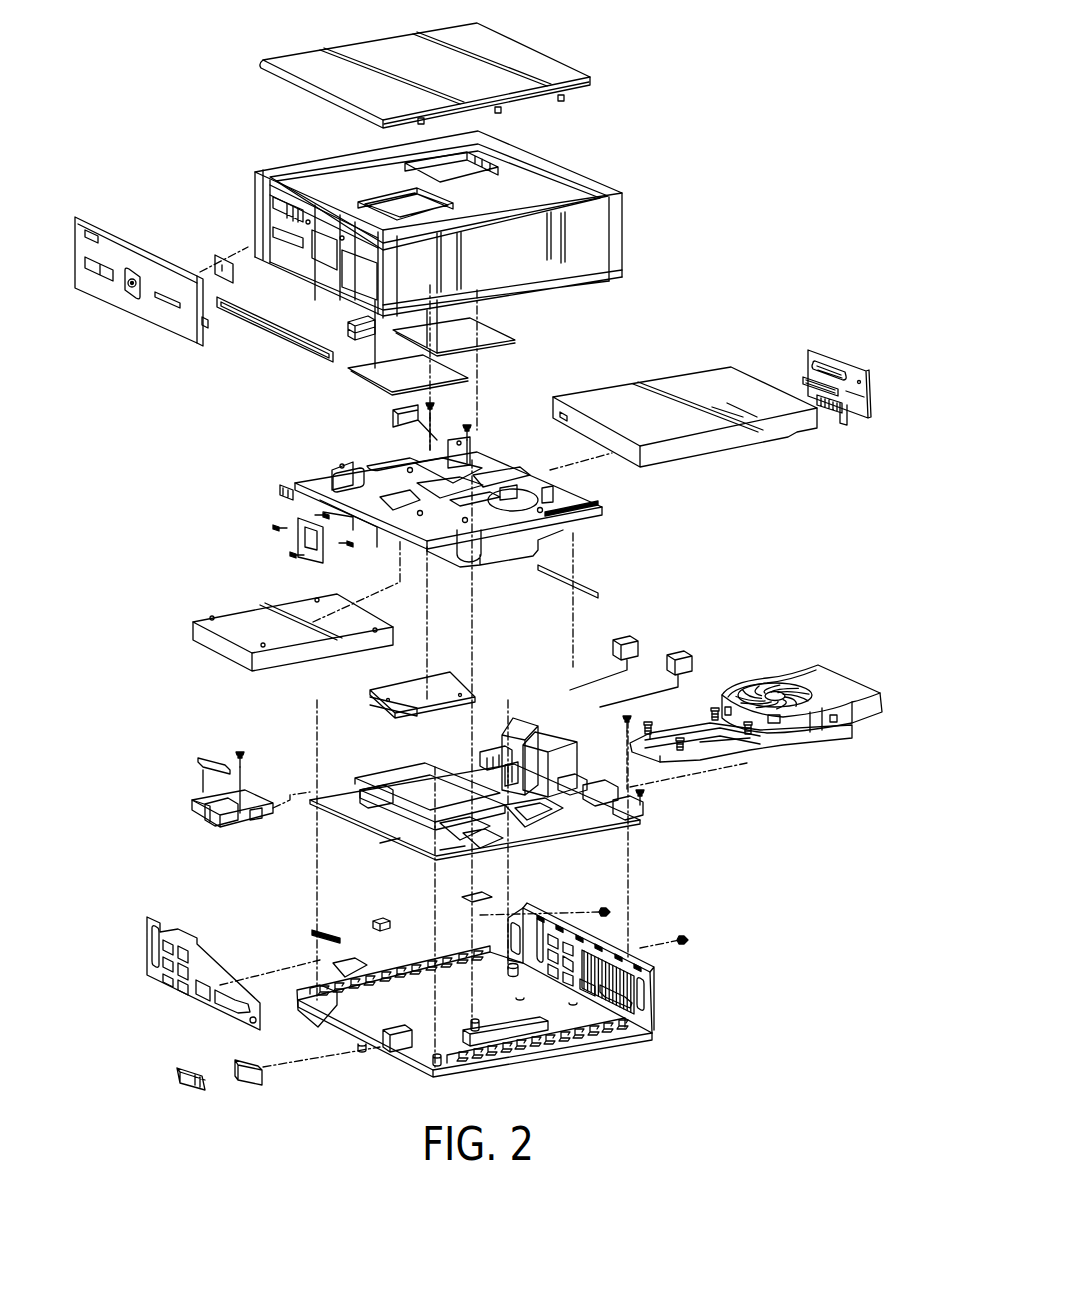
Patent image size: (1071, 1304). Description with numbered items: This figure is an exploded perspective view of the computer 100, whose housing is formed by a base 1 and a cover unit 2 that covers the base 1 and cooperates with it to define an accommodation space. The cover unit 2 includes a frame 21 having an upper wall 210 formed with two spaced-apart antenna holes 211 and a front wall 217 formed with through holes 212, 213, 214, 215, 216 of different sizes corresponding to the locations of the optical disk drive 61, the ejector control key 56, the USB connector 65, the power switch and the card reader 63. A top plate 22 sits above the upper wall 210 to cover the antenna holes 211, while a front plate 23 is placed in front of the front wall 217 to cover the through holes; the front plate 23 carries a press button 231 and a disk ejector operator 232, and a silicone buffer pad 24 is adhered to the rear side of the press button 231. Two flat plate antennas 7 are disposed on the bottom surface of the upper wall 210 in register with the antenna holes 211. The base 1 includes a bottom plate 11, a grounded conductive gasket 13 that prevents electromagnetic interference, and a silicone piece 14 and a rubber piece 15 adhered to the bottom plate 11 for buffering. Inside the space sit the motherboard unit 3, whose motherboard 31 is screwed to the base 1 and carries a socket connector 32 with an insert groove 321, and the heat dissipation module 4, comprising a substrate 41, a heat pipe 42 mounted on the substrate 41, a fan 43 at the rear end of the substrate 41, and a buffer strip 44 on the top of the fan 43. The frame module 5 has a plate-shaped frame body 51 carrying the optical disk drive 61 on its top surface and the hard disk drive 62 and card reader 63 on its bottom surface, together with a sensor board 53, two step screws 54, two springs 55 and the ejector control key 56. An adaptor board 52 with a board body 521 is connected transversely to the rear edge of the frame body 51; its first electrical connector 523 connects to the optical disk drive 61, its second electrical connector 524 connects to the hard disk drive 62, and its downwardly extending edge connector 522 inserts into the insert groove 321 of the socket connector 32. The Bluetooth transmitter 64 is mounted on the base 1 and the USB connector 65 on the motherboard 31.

The computer 100 is at (765, 109).
The base 1 is at (582, 1066).
The bottom plate 11 is at (587, 1023).
The conductive gasket 13 is at (145, 935).
The silicone piece 14 is at (480, 890).
The rubber piece 15 is at (380, 919).
The cover unit 2 is at (264, 149).
The frame 21 is at (587, 172).
The upper wall 210 is at (513, 182).
The antenna holes 211 is at (397, 208).
The through hole 212 is at (278, 207).
The through hole 213 is at (282, 212).
The through hole 214 is at (282, 232).
The through hole 215 is at (323, 252).
The through hole 216 is at (353, 278).
The front wall 217 is at (307, 258).
The top plate 22 is at (581, 55).
The front plate 23 is at (133, 340).
The press button 231 is at (138, 287).
The disk ejector operator 232 is at (92, 233).
The buffer pad 24 is at (223, 277).
The motherboard unit 3 is at (656, 821).
The motherboard 31 is at (573, 818).
The socket connector 32 is at (482, 745).
The insert groove 321 is at (493, 758).
The heat dissipation module 4 is at (789, 660).
The substrate 41 is at (730, 747).
The heat pipe 42 is at (670, 740).
The fan 43 is at (797, 725).
The buffer strip 44 is at (580, 582).
The frame module 5 is at (255, 465).
The frame body 51 is at (580, 492).
The adaptor board 52 is at (824, 340).
The board body 521 is at (850, 375).
The edge connector 522 is at (827, 402).
The first electrical connector 523 is at (820, 368).
The second electrical connector 524 is at (813, 383).
The sensor board 53 is at (300, 542).
The step screws 54 is at (280, 527).
The springs 55 is at (323, 515).
The ejector control key 56 is at (287, 488).
The optical disk drive 61 is at (648, 382).
The hard disk drive 62 is at (217, 604).
The card reader 63 is at (459, 662).
The Bluetooth transmitter 64 is at (180, 1067).
The USB connector 65 is at (190, 797).
The flat plate antennas 7 is at (487, 333).